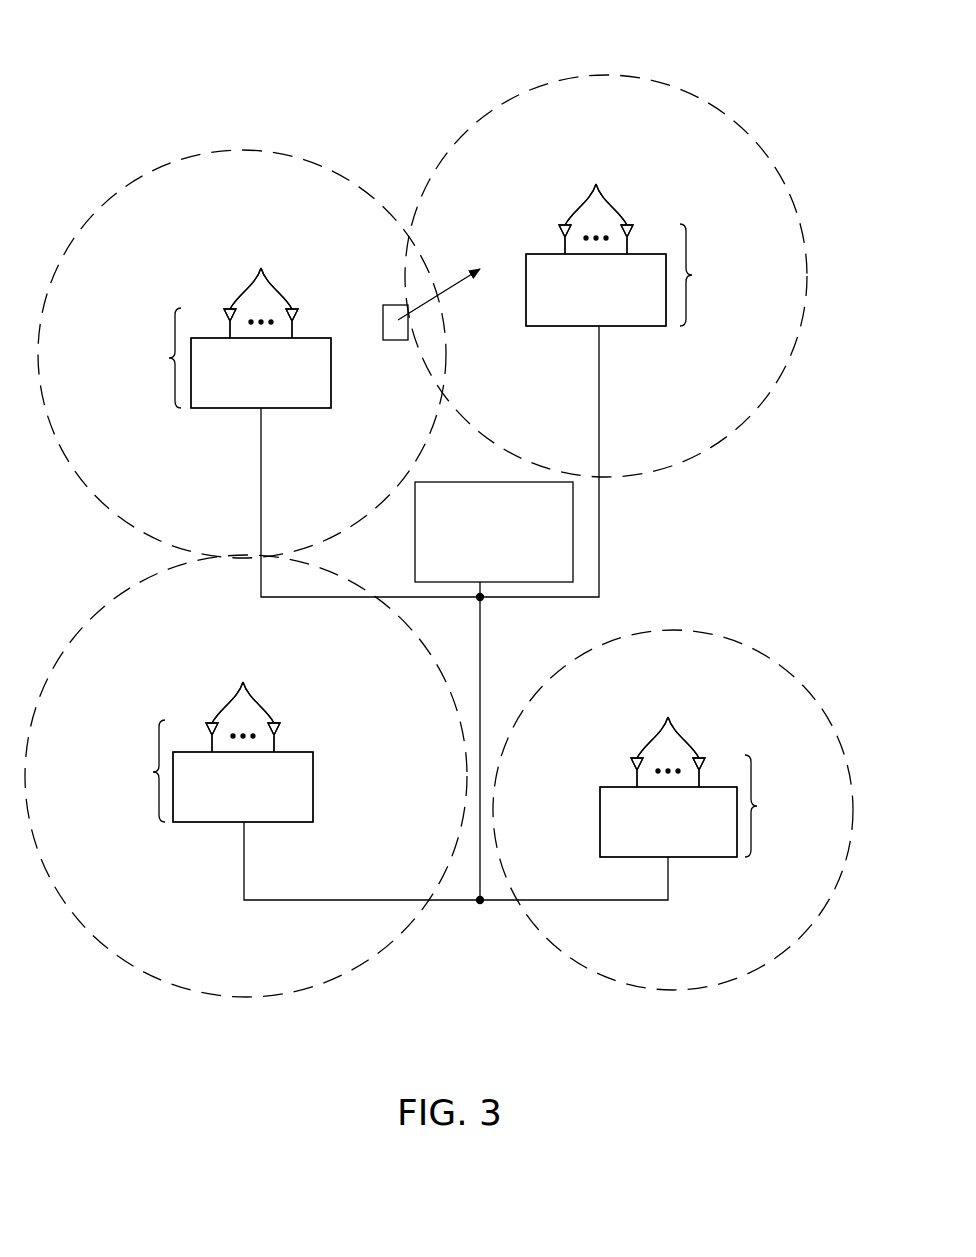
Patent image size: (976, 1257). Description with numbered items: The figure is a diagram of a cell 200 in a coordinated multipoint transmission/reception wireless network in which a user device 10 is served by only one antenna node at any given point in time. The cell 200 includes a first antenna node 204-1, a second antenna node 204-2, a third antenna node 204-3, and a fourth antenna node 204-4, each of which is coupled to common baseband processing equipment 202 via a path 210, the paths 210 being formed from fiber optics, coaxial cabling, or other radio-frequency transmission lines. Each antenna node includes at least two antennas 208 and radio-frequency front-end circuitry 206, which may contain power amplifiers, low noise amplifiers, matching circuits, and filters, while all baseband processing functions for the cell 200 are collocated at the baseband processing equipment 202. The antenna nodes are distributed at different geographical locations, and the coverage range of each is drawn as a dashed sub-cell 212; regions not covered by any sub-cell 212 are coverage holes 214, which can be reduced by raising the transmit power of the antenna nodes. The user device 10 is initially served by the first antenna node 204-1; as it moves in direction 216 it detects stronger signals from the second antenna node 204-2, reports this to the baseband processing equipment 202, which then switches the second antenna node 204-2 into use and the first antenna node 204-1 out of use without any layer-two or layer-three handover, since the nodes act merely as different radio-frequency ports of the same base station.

The cell 200 is at (136, 50).
The baseband processing equipment 202 is at (573, 530).
The first antenna node 204-1 is at (214, 338).
The second antenna node 204-2 is at (646, 255).
The third antenna node 204-3 is at (195, 752).
The fourth antenna node 204-4 is at (716, 787).
The radio-frequency front-end circuitry 206 is at (303, 408).
The antennas 208 is at (455, 472).
The path 210 is at (261, 478).
The sub-cells 212 is at (245, 150).
The coverage holes 214 is at (690, 564).
The direction 216 is at (430, 297).
The user device 10 is at (393, 340).